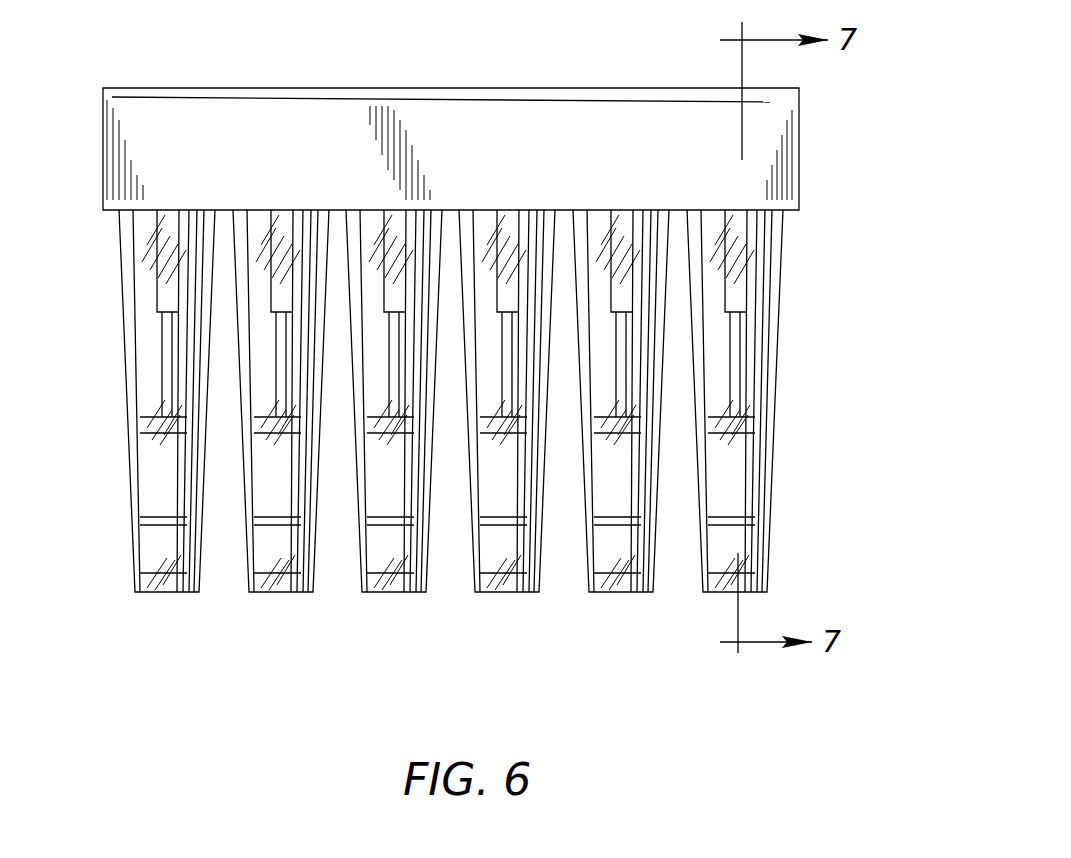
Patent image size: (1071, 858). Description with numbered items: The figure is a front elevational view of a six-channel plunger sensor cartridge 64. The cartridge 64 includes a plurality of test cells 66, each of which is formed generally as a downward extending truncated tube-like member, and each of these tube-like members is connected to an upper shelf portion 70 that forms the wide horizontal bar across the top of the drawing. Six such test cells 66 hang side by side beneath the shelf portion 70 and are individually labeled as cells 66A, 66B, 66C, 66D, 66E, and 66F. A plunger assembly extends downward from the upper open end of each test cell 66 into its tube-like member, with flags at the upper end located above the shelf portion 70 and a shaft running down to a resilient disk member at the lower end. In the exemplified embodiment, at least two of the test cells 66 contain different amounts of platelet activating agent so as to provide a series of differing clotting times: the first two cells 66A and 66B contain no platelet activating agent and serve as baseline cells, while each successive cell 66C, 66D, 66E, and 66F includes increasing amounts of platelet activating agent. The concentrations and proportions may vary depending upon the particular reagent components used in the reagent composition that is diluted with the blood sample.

The cartridge 64 is at (452, 80).
The upper shelf portion 70 is at (243, 88).
The test cells 66 is at (456, 442).
The first cell 66A is at (160, 593).
The second cell 66B is at (270, 593).
The third cell 66C is at (384, 593).
The fourth cell 66D is at (505, 593).
The fifth cell 66E is at (620, 593).
The sixth cell 66F is at (768, 570).